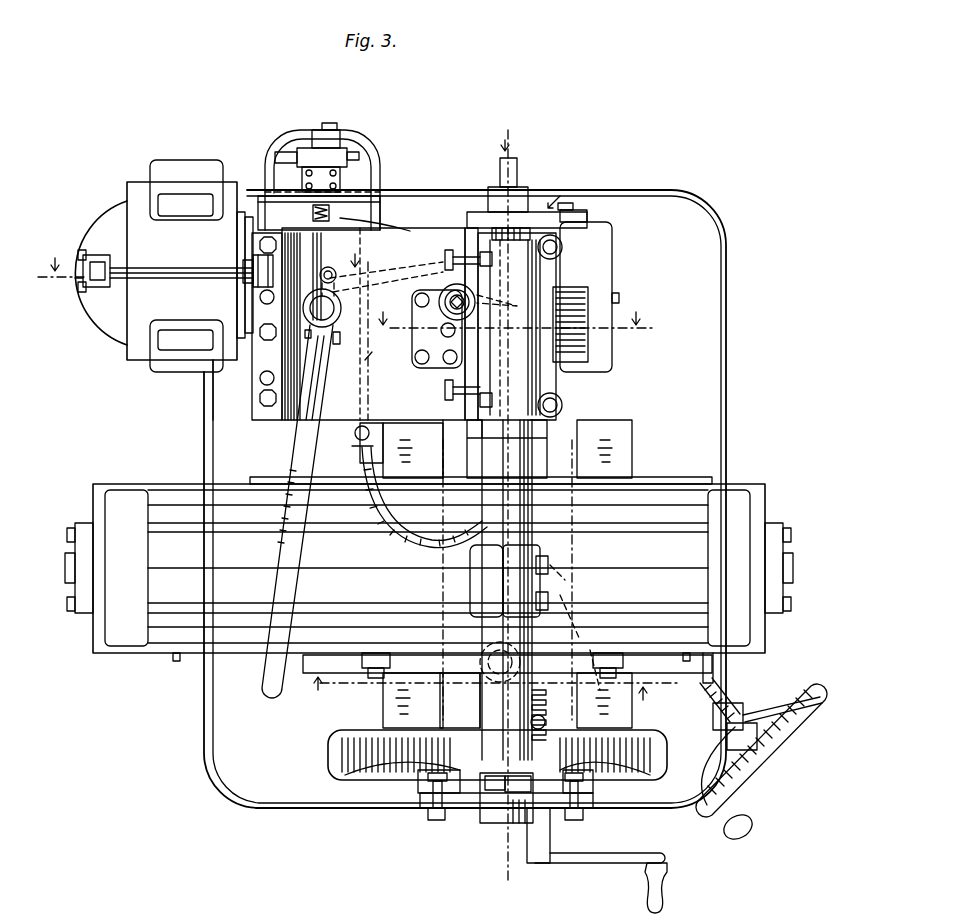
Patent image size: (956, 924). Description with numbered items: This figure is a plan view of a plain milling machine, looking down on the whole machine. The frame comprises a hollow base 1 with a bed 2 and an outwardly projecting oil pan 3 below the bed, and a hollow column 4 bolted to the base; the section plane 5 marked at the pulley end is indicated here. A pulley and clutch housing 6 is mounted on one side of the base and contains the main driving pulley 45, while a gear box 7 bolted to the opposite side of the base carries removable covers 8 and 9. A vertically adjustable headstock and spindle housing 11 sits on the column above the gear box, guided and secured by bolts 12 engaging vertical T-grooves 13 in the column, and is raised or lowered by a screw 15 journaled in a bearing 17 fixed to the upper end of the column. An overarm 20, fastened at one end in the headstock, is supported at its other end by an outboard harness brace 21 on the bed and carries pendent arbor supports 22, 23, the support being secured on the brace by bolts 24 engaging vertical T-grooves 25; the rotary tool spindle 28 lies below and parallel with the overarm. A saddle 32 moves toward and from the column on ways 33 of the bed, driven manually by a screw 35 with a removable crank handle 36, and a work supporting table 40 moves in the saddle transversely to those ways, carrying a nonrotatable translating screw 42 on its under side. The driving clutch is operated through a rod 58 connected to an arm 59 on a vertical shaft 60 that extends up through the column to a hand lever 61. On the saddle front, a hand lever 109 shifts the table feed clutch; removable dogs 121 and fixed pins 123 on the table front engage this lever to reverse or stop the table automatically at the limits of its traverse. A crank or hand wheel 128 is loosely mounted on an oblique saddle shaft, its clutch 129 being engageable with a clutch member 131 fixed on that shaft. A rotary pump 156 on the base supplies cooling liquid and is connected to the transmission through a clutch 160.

The hollow base 1 is at (205, 707).
The bed 2 is at (503, 574).
The oil pan 3 is at (454, 557).
The hollow column 4 is at (209, 324).
The shaft end coupling 5 is at (80, 279).
The pulley and clutch housing 6 is at (190, 277).
The gear box 7 is at (341, 286).
The removable cover 8 is at (620, 266).
The removable cover 9 is at (538, 497).
The headstock and spindle housing 11 is at (486, 470).
The bolts 12 is at (495, 262).
The vertical T-grooves 13 is at (445, 258).
The screw 15 is at (452, 306).
The bearing 17 is at (437, 329).
The overarm 20 is at (431, 487).
The outboard harness brace 21 is at (497, 769).
The pendent arbor support 22 is at (478, 805).
The pendent arbor support 23 is at (440, 555).
The bolts 24 is at (436, 822).
The vertical T-grooves 25 is at (436, 770).
The rotary tool spindle 28 is at (522, 210).
The saddle 32 is at (686, 478).
The ways 33 is at (633, 452).
The screw 35 is at (542, 728).
The removable crank handle 36 is at (594, 858).
The work supporting table 40 is at (358, 557).
The nonrotatable translating screw 42 is at (64, 568).
The main driving pulley 45 is at (176, 200).
The rod 58 is at (182, 266).
The arm 59 is at (333, 270).
The vertical shaft 60 is at (328, 308).
The hand lever 61 is at (298, 457).
The hand lever 109 is at (540, 712).
The removable dogs 121 is at (370, 653).
The fixed pins 123 is at (172, 658).
The crank or hand wheel 128 is at (786, 735).
The clutch 129 is at (748, 715).
The clutch member 131 is at (726, 700).
The rotary pump 156 is at (338, 161).
The clutch 160 is at (312, 213).